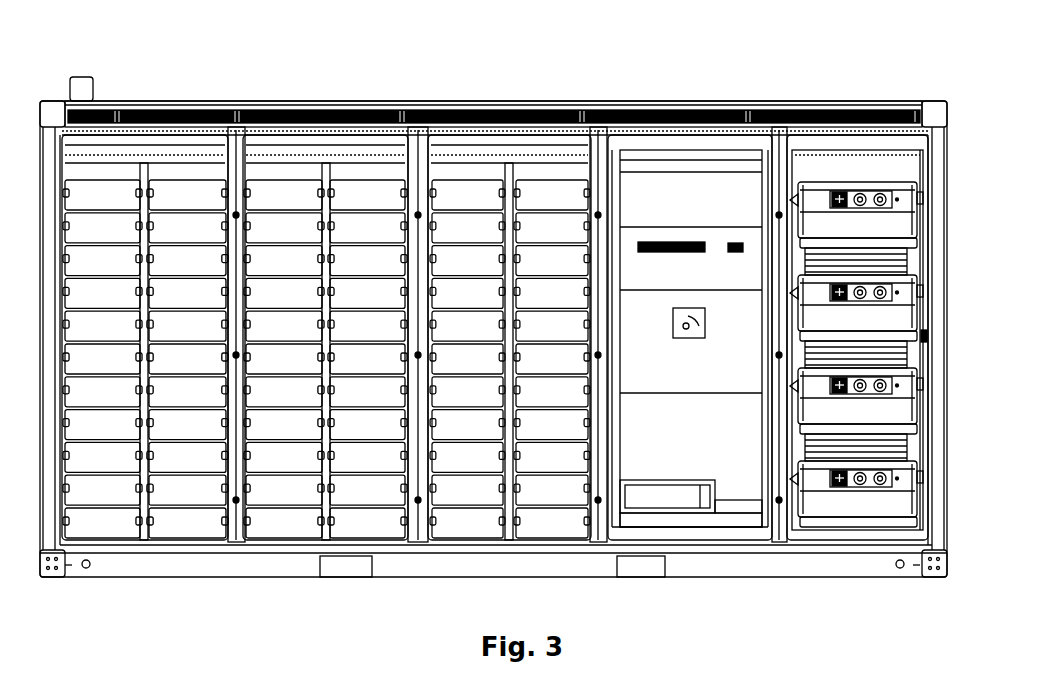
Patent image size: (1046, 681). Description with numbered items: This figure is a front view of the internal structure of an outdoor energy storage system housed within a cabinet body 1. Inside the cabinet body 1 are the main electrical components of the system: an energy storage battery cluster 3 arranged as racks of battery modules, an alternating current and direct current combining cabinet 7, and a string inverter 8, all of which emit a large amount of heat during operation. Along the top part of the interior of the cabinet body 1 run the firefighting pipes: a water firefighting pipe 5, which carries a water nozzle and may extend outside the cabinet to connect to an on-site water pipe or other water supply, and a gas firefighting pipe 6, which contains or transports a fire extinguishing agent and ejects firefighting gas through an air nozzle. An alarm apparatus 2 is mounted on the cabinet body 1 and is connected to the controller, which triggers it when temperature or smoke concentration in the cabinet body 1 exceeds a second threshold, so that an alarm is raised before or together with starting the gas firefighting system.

The cabinet body 1 is at (46, 100).
The alarm apparatus 2 is at (84, 77).
The energy storage battery cluster 3 is at (108, 197).
The water firefighting pipe 5 is at (559, 100).
The gas firefighting pipe 6 is at (186, 108).
The alternating current and direct current combining cabinet 7 is at (653, 195).
The string inverter 8 is at (831, 185).